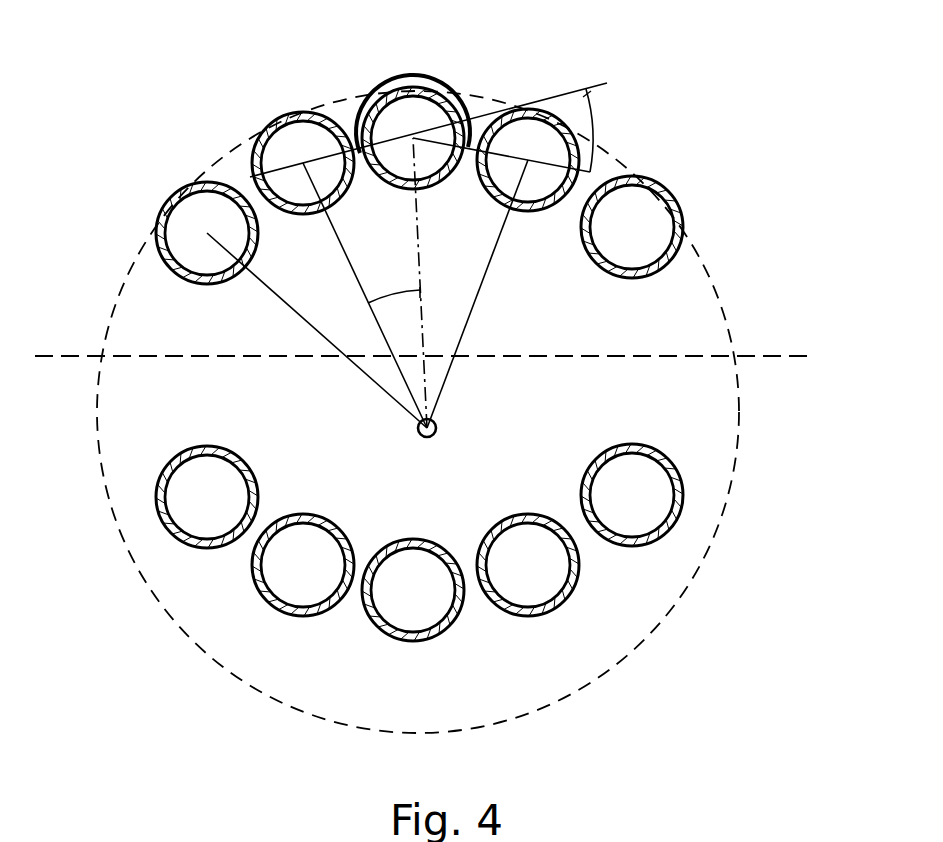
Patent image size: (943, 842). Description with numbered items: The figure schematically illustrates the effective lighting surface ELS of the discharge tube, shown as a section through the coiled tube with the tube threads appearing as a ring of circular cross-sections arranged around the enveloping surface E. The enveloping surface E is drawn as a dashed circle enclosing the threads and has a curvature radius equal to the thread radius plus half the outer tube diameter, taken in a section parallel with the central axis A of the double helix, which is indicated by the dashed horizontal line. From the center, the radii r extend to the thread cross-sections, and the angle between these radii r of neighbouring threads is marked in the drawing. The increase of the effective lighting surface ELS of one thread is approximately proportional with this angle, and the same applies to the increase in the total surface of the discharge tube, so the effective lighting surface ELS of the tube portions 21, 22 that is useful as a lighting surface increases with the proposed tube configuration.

The tube portion 21 is at (170, 199).
The tube portion 22 is at (266, 118).
The effective lighting surface ELS is at (440, 83).
The enveloping surface E is at (702, 258).
The central axis A is at (755, 356).
The radius r is at (277, 296).